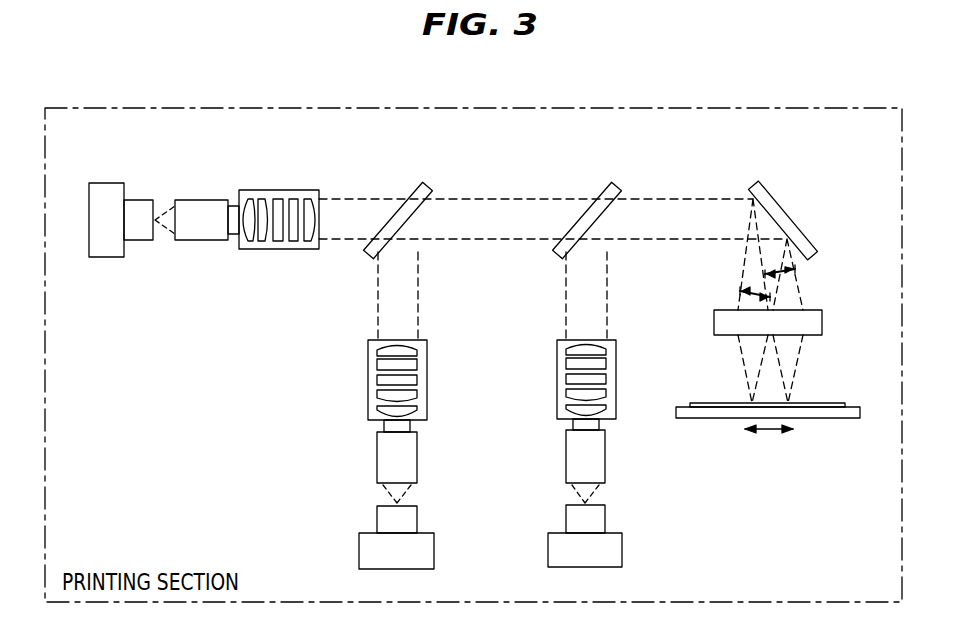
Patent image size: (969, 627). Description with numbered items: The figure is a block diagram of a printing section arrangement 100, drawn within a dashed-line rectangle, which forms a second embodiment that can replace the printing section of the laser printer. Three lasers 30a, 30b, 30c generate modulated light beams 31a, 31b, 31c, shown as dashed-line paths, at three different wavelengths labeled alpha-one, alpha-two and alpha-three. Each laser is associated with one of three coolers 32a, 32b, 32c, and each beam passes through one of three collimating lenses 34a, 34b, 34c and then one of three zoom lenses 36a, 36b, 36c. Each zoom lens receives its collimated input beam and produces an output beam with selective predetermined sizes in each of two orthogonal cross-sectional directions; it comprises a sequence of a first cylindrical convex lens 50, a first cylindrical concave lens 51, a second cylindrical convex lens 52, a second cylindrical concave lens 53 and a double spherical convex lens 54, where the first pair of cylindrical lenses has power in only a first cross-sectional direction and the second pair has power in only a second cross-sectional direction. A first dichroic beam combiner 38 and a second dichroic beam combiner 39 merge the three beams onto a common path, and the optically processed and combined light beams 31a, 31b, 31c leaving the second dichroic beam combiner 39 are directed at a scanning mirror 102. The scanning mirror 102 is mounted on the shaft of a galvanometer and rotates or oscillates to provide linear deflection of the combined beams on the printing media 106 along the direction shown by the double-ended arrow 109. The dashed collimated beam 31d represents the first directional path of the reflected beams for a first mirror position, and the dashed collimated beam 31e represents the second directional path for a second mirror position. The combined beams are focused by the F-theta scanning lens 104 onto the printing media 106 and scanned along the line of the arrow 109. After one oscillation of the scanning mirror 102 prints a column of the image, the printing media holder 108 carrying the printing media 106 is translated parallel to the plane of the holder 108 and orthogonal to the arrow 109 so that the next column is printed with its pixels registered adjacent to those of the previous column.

The printing section arrangement 100 is at (226, 108).
The first laser 30a is at (108, 183).
The second laser 30b is at (359, 553).
The third laser 30c is at (622, 550).
The first light beam 31a is at (168, 211).
The second light beam 31b is at (390, 498).
The third light beam 31c is at (592, 493).
The collimated beam 31d is at (800, 285).
The collimated beam 31e is at (745, 297).
The first cooler 32a is at (140, 242).
The second cooler 32b is at (377, 518).
The third cooler 32c is at (605, 518).
The first collimating lens 34a is at (197, 242).
The second collimating lens 34b is at (377, 455).
The third collimating lens 34c is at (605, 450).
The first zoom lens 36a is at (281, 190).
The second zoom lens 36b is at (368, 373).
The third zoom lens 36c is at (616, 378).
The first dichroic beam combiner 38 is at (412, 183).
The second dichroic beam combiner 39 is at (600, 183).
The first cylindrical convex lens 50 is at (246, 249).
The first cylindrical concave lens 51 is at (261, 249).
The second cylindrical convex lens 52 is at (279, 249).
The second cylindrical concave lens 53 is at (297, 249).
The double spherical convex lens 54 is at (311, 249).
The scanning mirror 102 is at (790, 215).
The F-theta scanning lens 104 is at (822, 322).
The printing media 106 is at (820, 403).
The printing media holder 108 is at (838, 418).
The double-ended arrow 109 is at (770, 432).